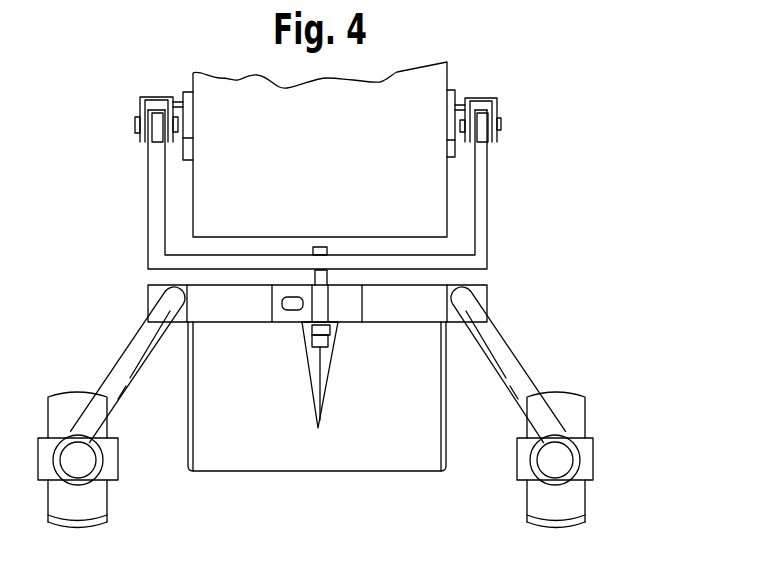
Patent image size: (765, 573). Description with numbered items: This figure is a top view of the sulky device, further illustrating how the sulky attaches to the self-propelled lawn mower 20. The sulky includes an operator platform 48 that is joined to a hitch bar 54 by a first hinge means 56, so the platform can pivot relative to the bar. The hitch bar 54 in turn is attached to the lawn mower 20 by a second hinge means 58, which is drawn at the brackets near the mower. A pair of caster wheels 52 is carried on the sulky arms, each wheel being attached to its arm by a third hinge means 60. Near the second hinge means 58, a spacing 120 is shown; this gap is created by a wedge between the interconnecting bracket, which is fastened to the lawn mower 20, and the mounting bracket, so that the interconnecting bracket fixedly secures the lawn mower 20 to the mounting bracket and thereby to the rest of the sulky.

The lawn mower 20 is at (413, 90).
The hitch bar 54 is at (478, 205).
The second hinge means 58 is at (507, 103).
The spacing 120 is at (463, 143).
The operator platform 48 is at (398, 457).
The first hinge means 56 is at (341, 361).
The caster wheels 52 is at (573, 408).
The third hinge means 60 is at (555, 460).